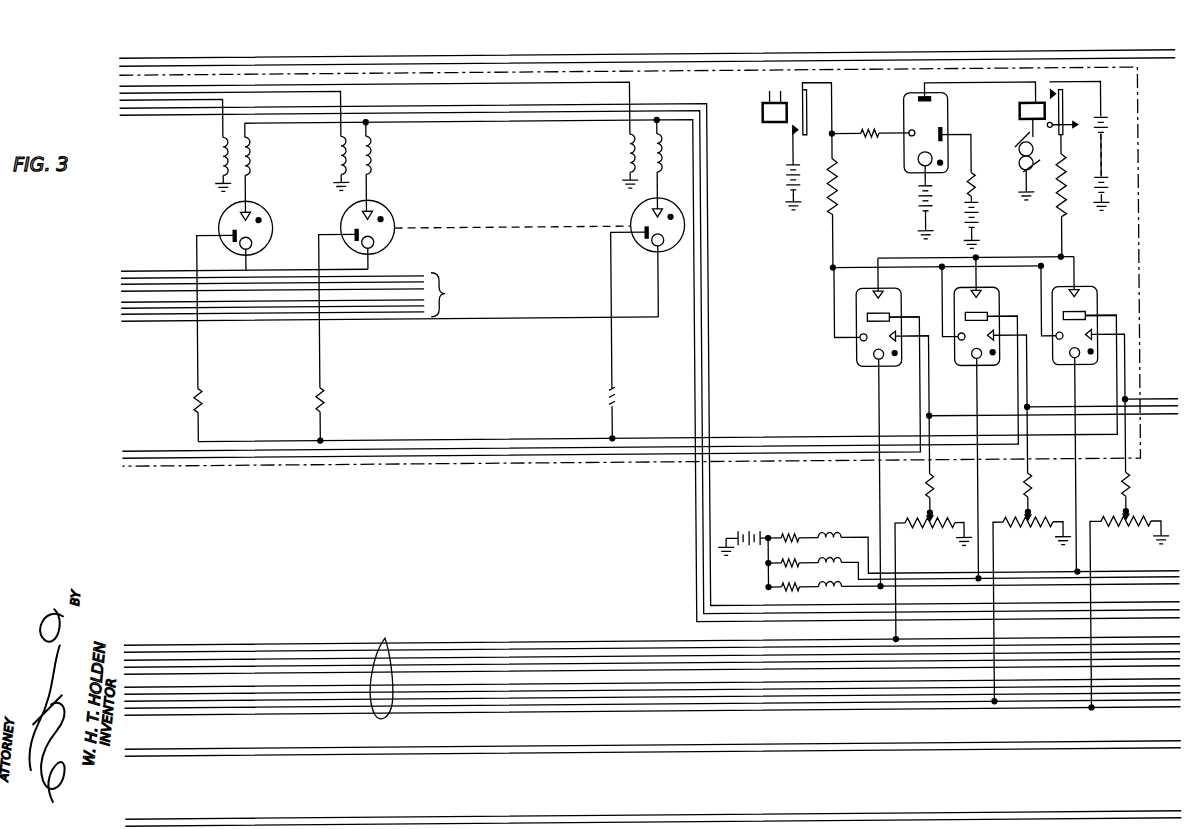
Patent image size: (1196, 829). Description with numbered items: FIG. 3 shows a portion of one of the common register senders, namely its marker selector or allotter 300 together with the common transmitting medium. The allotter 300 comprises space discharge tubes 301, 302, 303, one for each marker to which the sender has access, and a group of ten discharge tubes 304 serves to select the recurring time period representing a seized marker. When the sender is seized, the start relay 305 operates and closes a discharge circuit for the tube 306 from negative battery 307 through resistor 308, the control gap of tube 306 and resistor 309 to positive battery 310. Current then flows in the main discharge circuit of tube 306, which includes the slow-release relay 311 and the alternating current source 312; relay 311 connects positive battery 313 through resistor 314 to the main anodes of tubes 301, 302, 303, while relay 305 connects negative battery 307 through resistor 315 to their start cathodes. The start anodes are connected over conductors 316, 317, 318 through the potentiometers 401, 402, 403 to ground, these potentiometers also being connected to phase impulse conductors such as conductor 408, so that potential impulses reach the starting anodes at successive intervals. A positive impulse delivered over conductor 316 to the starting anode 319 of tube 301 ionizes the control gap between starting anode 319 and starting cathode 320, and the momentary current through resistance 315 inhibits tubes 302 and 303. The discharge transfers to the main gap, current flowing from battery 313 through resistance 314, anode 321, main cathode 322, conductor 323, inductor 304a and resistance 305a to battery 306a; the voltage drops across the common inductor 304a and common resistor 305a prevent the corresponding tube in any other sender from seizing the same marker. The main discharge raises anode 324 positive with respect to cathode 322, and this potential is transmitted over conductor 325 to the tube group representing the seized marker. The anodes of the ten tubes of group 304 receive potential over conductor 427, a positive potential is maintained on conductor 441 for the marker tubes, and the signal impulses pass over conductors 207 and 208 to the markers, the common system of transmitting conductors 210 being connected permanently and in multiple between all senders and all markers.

The conductor 207 is at (870, 753).
The conductor 208 is at (806, 752).
The transmitting conductors 210 is at (388, 637).
The marker selector or allotter 300 is at (629, 266).
The space discharge tube 301 is at (863, 422).
The space discharge tube 302 is at (970, 368).
The space discharge tube 303 is at (1068, 368).
The group of discharge tubes 304 is at (438, 163).
The inductor 304a is at (840, 591).
The start relay 305 is at (779, 124).
The resistance 305a is at (778, 590).
The tube 306 is at (950, 118).
The battery 306a is at (758, 514).
The negative battery 307 is at (788, 172).
The resistor 308 is at (876, 130).
The resistor 309 is at (973, 180).
The positive battery 310 is at (962, 226).
The slow-release relay 311 is at (1022, 108).
The alternating current source 312 is at (1021, 170).
The positive battery 313 is at (1106, 129).
The resistor 314 is at (1068, 210).
The resistor 315 is at (841, 190).
The conductor 316 is at (931, 420).
The conductor 317 is at (1027, 410).
The conductor 318 is at (1127, 405).
The starting anode 319 is at (893, 346).
The starting cathode 320 is at (860, 341).
The anode 321 is at (876, 293).
The main cathode 322 is at (873, 355).
The conductor 323 is at (880, 494).
The anode 324 is at (868, 319).
The conductor 325 is at (637, 454).
The potentiometer 401 is at (934, 556).
The potentiometer 402 is at (1033, 587).
The potentiometer 403 is at (1130, 590).
The phase impulse conductor 408 is at (256, 646).
The conductor 427 is at (690, 585).
The conductor 441 is at (722, 413).